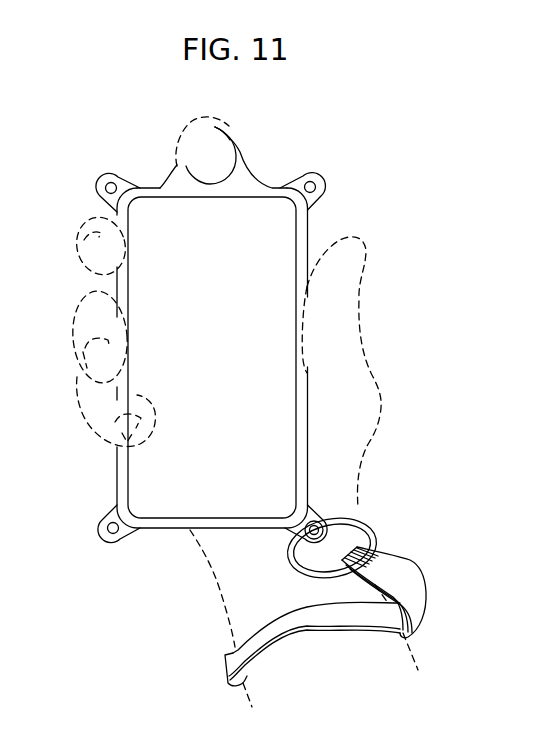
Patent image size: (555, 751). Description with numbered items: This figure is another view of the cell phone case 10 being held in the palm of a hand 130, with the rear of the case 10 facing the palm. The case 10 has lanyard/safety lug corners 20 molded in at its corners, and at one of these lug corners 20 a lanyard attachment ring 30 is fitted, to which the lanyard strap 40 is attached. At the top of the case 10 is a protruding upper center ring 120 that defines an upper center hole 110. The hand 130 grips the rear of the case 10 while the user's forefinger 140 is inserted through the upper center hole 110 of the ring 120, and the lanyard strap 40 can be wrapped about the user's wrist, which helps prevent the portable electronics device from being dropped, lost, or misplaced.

The cell phone case 10 is at (306, 152).
The lanyard/safety lug corners 20 is at (110, 174).
The lanyard attachment ring 30 is at (367, 531).
The lanyard strap 40 is at (232, 653).
The upper center hole 110 is at (232, 143).
The protruding upper center ring 120 is at (222, 129).
The hand 130 is at (413, 305).
The finger 140 is at (182, 135).